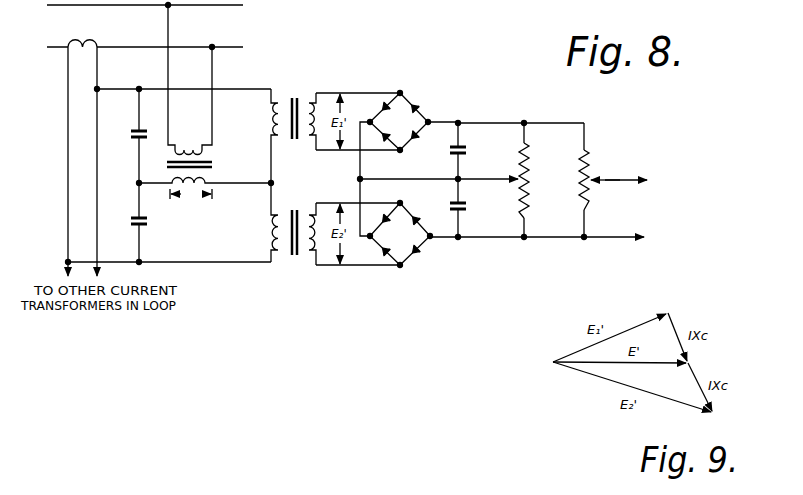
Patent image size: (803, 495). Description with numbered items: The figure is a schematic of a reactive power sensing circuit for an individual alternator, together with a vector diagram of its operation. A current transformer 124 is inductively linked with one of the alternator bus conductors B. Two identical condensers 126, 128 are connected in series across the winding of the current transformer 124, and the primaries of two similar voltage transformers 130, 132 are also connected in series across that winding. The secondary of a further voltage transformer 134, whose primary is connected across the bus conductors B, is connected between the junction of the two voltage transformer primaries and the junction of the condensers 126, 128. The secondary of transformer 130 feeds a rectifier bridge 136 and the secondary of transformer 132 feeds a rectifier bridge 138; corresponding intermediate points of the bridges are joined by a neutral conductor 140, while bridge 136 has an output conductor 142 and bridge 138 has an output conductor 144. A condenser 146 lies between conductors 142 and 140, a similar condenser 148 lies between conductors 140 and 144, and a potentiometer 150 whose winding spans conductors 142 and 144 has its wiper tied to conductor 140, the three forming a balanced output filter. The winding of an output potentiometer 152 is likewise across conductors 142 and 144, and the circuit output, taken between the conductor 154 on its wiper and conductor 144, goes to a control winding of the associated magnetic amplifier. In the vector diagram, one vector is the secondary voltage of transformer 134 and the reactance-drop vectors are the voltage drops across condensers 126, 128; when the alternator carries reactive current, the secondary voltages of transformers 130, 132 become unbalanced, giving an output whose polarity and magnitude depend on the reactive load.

The alternator bus conductors B is at (194, 6).
The current transformer 124 is at (87, 41).
The condenser 126 is at (134, 126).
The condenser 128 is at (133, 229).
The voltage transformer 130 is at (288, 97).
The voltage transformer 132 is at (290, 213).
The voltage transformer 134 is at (207, 161).
The rectifier bridge 136 is at (409, 103).
The rectifier bridge 138 is at (407, 268).
The conductor 140 is at (363, 165).
The output conductor 142 is at (483, 123).
The output conductor 144 is at (480, 238).
The condenser 146 is at (465, 156).
The condenser 148 is at (465, 212).
The potentiometer 150 is at (533, 168).
The output potentiometer 152 is at (594, 165).
The conductor 154 is at (626, 180).